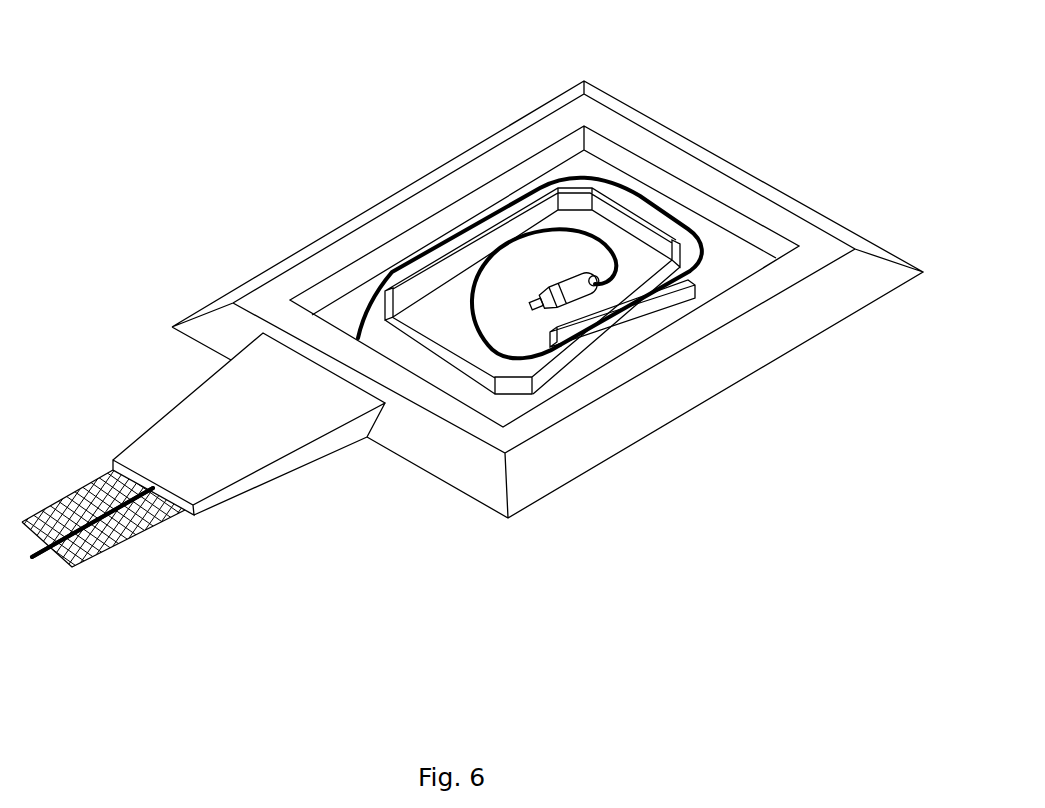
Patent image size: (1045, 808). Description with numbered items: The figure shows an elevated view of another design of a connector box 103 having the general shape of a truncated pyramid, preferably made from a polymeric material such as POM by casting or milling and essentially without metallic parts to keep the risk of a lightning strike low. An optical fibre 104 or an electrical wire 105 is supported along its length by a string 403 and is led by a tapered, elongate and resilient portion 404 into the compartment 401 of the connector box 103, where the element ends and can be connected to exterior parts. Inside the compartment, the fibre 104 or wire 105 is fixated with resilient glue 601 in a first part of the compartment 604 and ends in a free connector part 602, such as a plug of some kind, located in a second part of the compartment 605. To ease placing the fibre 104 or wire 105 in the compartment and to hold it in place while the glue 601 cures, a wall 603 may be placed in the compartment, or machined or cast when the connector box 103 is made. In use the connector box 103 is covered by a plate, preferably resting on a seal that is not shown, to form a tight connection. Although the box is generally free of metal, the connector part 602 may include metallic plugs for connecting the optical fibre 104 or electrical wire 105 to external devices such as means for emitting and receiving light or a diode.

The connector box 103 is at (745, 355).
The compartment 401 is at (580, 162).
The resilient glue 601 is at (367, 298).
The first part of the compartment 604 is at (393, 265).
The second part of the compartment 605 is at (542, 263).
The connector part 602 is at (568, 290).
The wall 603 is at (587, 353).
The tapered, elongate and resilient portion 404 is at (232, 452).
The string 403 is at (127, 530).
The optical fibre 104 is at (45, 552).
The electrical wire 105 is at (45, 552).